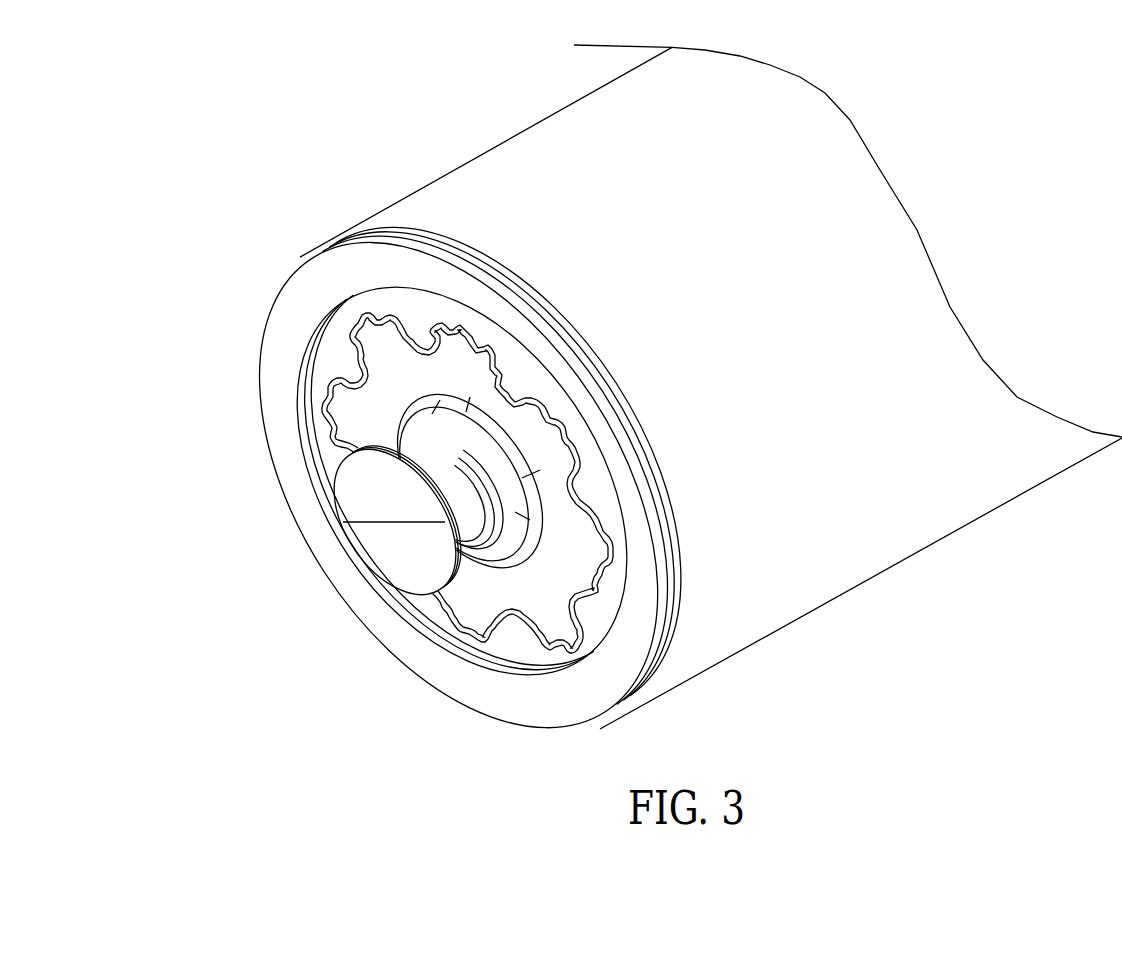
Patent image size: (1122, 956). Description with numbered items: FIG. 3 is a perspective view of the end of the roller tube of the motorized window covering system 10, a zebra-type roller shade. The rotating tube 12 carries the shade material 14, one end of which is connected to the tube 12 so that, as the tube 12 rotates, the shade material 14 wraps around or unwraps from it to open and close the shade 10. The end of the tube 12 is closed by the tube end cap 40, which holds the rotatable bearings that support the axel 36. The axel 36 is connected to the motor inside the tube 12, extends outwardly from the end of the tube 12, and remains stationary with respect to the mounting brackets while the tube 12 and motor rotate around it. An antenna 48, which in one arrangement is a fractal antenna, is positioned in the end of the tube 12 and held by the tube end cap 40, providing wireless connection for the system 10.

The motorized window covering system 10 is at (223, 214).
The tube 12 is at (456, 248).
The shade material 14 is at (769, 322).
The axel 36 is at (397, 550).
The tube end cap 40 is at (335, 459).
The antenna 48 is at (536, 645).